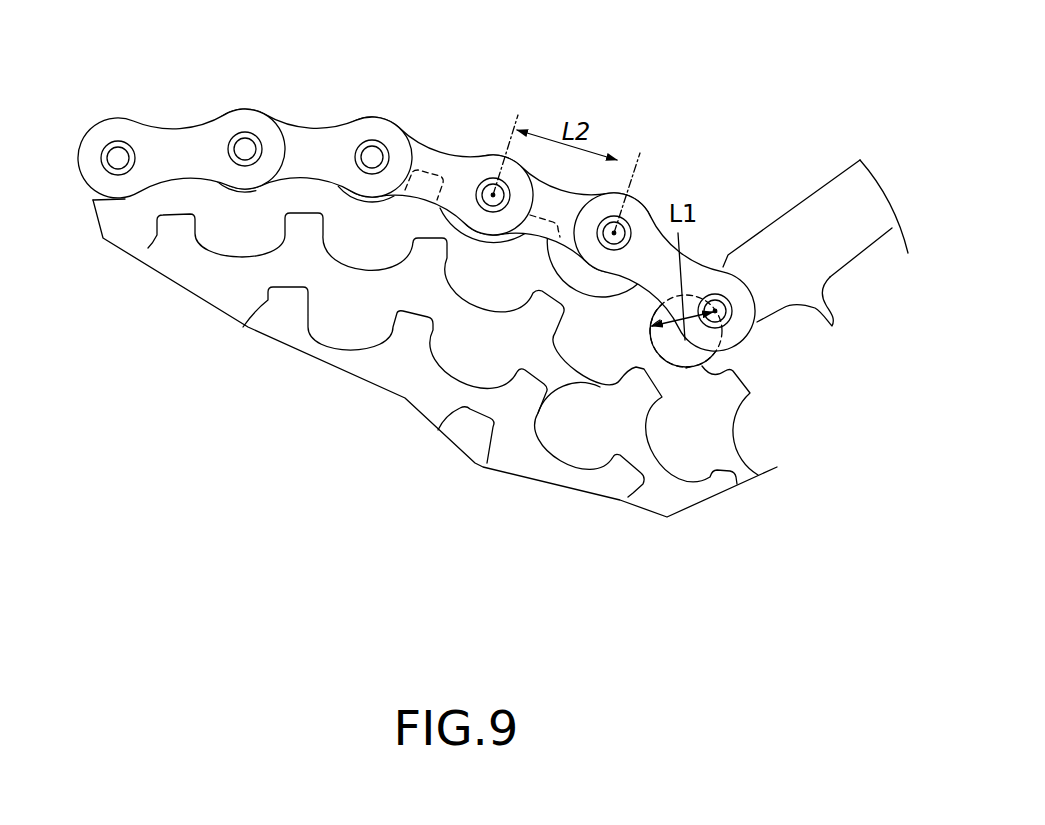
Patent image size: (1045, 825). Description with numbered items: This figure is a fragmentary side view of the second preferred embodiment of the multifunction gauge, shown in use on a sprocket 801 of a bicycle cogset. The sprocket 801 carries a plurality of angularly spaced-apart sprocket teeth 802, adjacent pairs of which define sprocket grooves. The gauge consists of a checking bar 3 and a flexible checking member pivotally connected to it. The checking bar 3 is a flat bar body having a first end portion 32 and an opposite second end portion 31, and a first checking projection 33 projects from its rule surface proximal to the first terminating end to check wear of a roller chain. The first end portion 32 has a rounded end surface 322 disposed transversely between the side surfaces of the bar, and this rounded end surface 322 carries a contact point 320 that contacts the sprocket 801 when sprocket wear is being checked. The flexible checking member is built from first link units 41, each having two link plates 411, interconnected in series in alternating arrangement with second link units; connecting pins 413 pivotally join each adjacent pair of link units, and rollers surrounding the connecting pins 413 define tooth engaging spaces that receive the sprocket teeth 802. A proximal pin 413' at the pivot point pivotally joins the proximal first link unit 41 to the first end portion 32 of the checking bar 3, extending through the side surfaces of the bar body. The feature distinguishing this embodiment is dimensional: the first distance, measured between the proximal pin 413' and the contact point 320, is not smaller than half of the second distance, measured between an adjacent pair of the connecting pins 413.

The checking bar 3 is at (802, 200).
The second end portion 31 is at (850, 213).
The first end portion 32 is at (700, 368).
The contact point 320 is at (652, 326).
The rounded end surface 322 is at (686, 368).
The first checking projection 33 is at (833, 322).
The first link unit 41 is at (308, 128).
The link plate 411 is at (185, 136).
The connecting pin 413 is at (586, 158).
The proximal pin 413' is at (769, 332).
The sprocket 801 is at (182, 240).
The sprocket tooth 802 is at (733, 392).